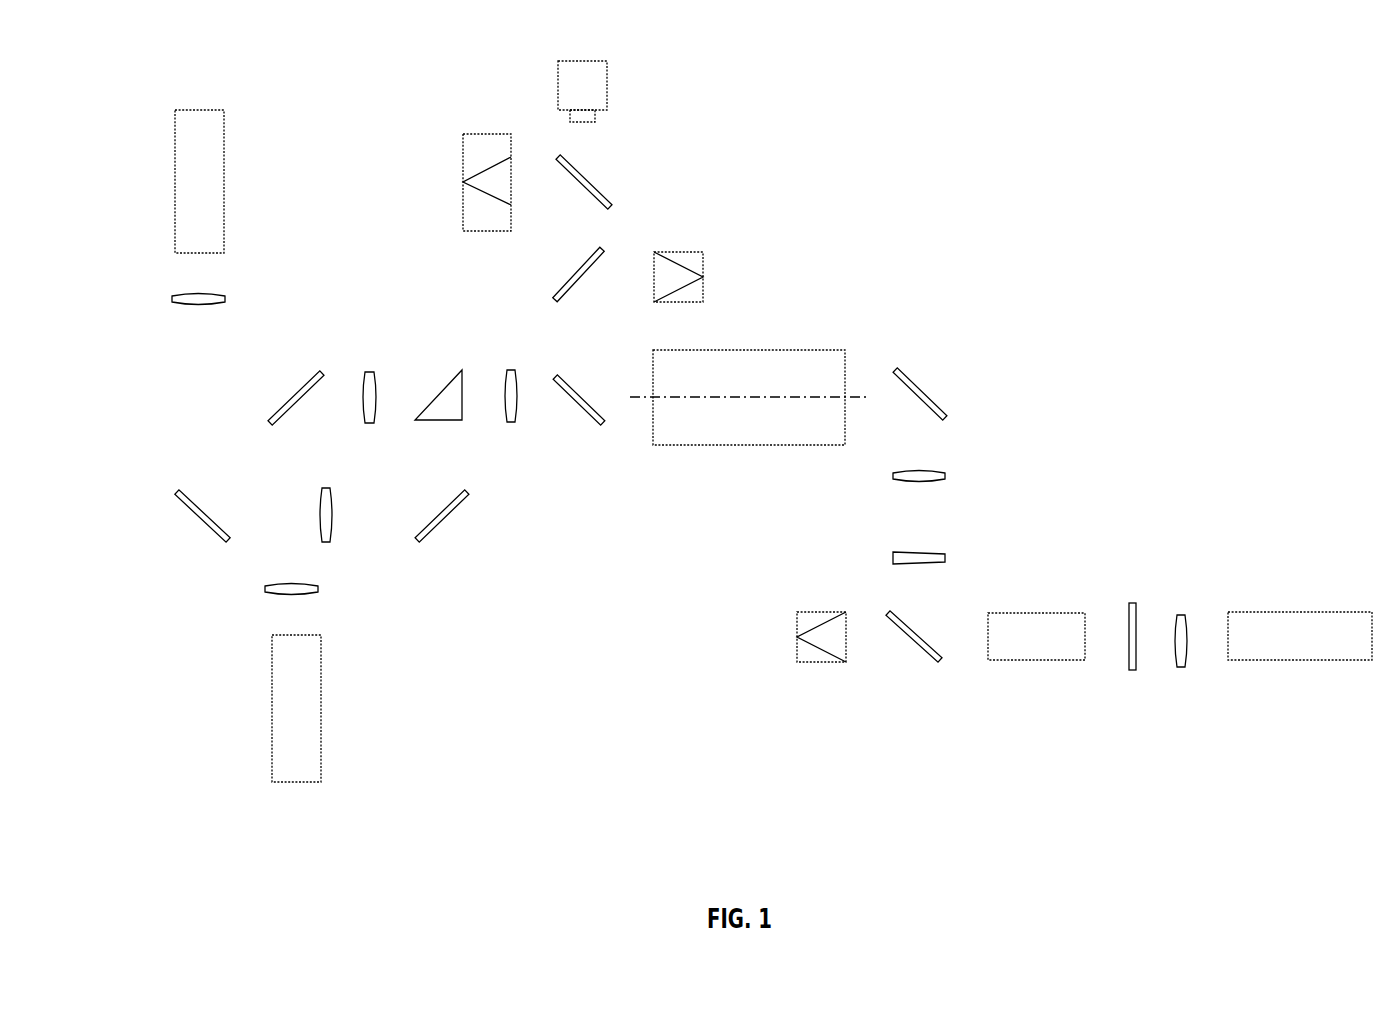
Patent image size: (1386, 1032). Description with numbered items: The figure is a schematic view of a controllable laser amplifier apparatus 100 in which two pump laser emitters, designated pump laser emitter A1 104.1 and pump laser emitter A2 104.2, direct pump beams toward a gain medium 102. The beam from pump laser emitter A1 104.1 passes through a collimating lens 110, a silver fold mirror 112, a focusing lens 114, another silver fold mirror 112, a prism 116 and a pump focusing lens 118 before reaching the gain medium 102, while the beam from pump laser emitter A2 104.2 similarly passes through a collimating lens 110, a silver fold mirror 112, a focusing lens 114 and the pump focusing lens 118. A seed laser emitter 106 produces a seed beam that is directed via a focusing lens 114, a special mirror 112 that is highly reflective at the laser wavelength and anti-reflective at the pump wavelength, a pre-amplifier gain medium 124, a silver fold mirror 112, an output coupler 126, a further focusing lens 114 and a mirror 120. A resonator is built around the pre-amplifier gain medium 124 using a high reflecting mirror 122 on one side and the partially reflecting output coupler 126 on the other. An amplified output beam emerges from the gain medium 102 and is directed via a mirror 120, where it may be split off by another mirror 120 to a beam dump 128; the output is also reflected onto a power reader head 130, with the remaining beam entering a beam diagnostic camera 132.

The controllable laser amplifier apparatus 100 is at (133, 59).
The gain medium 102 is at (773, 348).
The pump laser emitter A1 104.1 is at (226, 181).
The pump laser emitter A2 104.2 is at (323, 709).
The seed laser emitter 106 is at (1298, 610).
The collimating lens 110 is at (226, 300).
The silver fold mirror 112 is at (319, 371).
The focusing lens 114 is at (370, 425).
The prism 116 is at (462, 368).
The pump focusing lens 118 is at (511, 424).
The mirror 120 is at (612, 206).
The high reflecting mirror 122 is at (1132, 672).
The pre-amplifier gain medium 124 is at (1037, 662).
The output coupler 126 is at (891, 559).
The beam dump 128 is at (705, 265).
The power reader head 130 is at (462, 160).
The beam diagnostic camera 132 is at (557, 82).